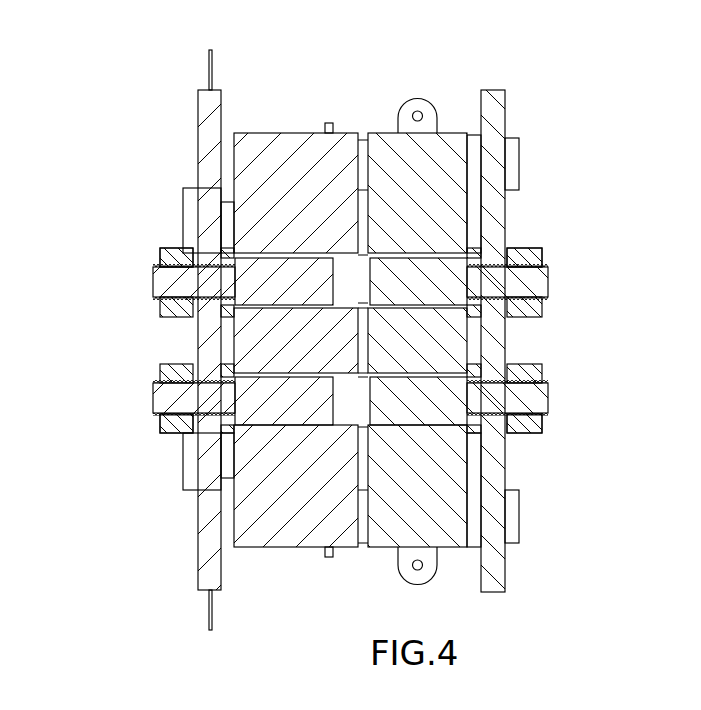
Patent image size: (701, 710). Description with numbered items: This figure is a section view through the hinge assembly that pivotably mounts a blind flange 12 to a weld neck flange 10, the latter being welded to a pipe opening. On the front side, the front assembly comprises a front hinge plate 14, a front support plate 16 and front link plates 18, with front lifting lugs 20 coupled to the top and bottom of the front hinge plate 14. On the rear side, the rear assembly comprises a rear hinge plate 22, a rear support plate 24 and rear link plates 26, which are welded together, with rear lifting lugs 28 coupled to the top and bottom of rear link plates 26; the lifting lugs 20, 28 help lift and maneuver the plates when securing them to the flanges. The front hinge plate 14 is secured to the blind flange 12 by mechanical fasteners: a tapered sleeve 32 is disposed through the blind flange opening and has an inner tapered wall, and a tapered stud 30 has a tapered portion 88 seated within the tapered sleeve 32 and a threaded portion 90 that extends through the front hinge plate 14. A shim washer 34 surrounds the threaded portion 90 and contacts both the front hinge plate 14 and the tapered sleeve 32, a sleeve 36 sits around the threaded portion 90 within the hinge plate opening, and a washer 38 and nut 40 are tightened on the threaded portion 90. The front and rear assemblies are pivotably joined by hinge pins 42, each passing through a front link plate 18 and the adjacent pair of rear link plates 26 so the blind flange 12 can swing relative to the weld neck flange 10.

The weld neck flange 10 is at (392, 137).
The blind flange 12 is at (290, 135).
The front hinge plate 14 is at (205, 142).
The front support plate 16 is at (210, 202).
The front link plate 18 is at (190, 207).
The front lifting lug 20 is at (208, 75).
The rear hinge plate 22 is at (496, 96).
The rear support plate 24 is at (473, 205).
The rear link plate 26 is at (515, 160).
The rear lifting lug 28 is at (418, 100).
The tapered stud 30 is at (122, 277).
The tapered sleeve 32 is at (262, 260).
The shim washer 34 is at (228, 248).
The sleeve 36 is at (193, 308).
The washer 38 is at (193, 248).
The nut 40 is at (160, 252).
The hinge pin 42 is at (328, 122).
The tapered portion 88 is at (245, 293).
The threaded portion 90 is at (157, 283).